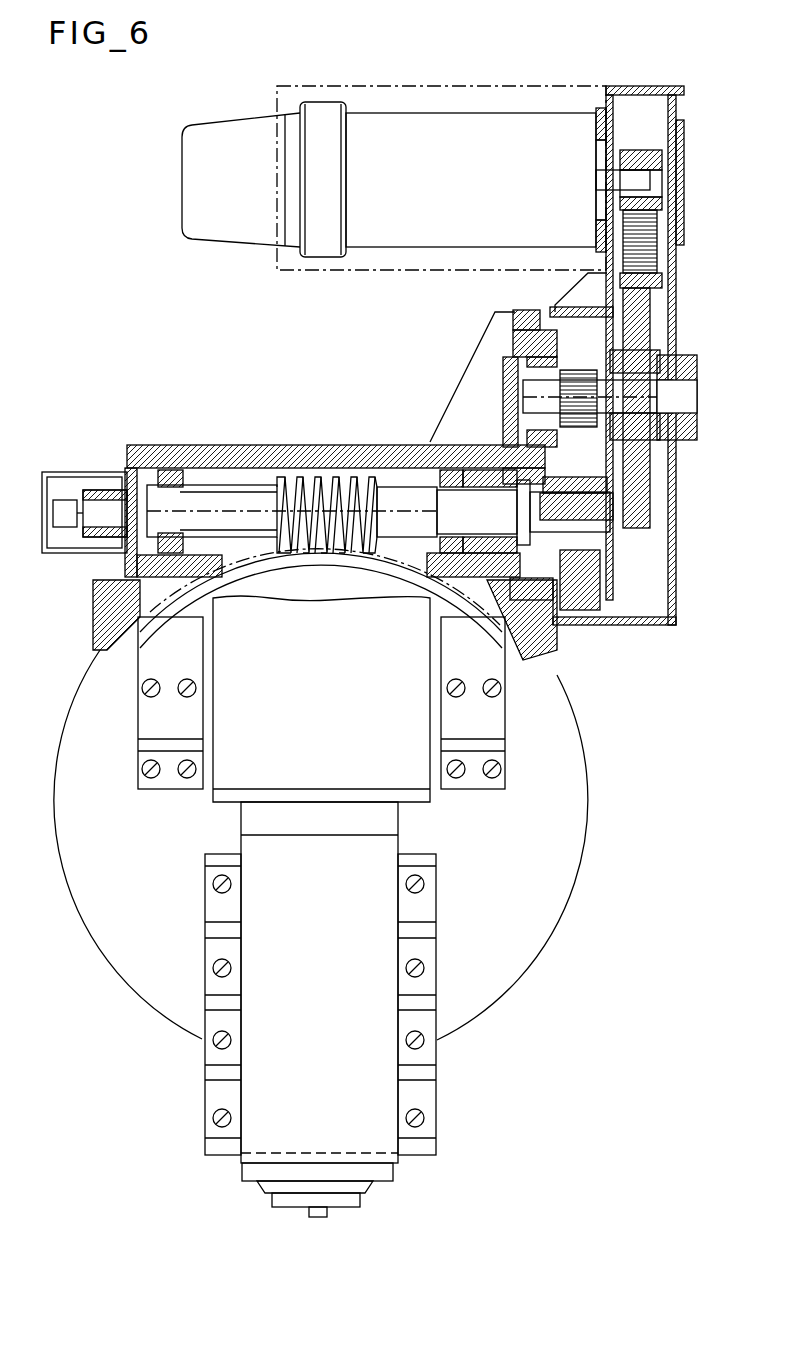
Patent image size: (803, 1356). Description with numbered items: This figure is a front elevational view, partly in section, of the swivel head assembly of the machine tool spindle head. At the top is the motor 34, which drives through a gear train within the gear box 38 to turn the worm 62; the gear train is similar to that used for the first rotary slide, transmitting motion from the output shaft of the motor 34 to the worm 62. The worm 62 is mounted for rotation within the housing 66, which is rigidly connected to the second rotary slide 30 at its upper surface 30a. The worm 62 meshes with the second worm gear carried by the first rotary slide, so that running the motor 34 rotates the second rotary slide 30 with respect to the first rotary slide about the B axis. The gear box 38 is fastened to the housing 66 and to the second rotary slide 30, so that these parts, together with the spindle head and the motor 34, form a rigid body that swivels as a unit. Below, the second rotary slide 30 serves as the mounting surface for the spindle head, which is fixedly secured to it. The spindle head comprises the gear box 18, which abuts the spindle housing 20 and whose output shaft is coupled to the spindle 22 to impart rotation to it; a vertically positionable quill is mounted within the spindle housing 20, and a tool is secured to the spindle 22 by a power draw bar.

The gear box 18 is at (324, 724).
The spindle housing 20 is at (324, 999).
The spindle 22 is at (298, 1206).
The second rotary slide 30 is at (557, 838).
The upper surface of second rotary slide 30a is at (104, 576).
The motor 34 is at (456, 190).
The gear box 38 is at (672, 572).
The worm 62 is at (398, 496).
The housing 66 is at (262, 462).